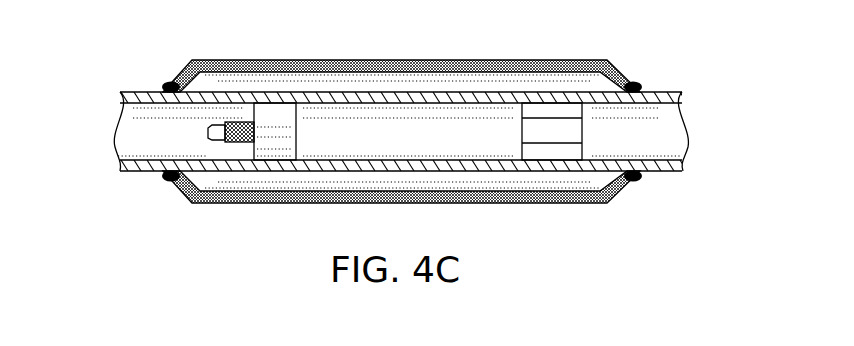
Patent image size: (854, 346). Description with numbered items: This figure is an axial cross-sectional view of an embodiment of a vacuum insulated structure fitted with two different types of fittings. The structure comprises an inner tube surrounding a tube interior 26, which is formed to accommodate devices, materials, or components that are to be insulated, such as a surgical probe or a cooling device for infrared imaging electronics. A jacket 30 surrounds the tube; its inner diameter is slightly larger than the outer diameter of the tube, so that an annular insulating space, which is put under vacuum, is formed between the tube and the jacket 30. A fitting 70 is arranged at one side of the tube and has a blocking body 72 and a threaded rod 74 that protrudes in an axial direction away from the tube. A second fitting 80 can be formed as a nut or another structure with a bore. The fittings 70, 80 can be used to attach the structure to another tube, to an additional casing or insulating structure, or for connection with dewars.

The tube interior 26 is at (178, 130).
The jacket 30 is at (555, 67).
The fitting 70 is at (268, 116).
The blocking body 72 is at (220, 136).
The threaded rod 74 is at (267, 148).
The fitting 80 is at (582, 130).